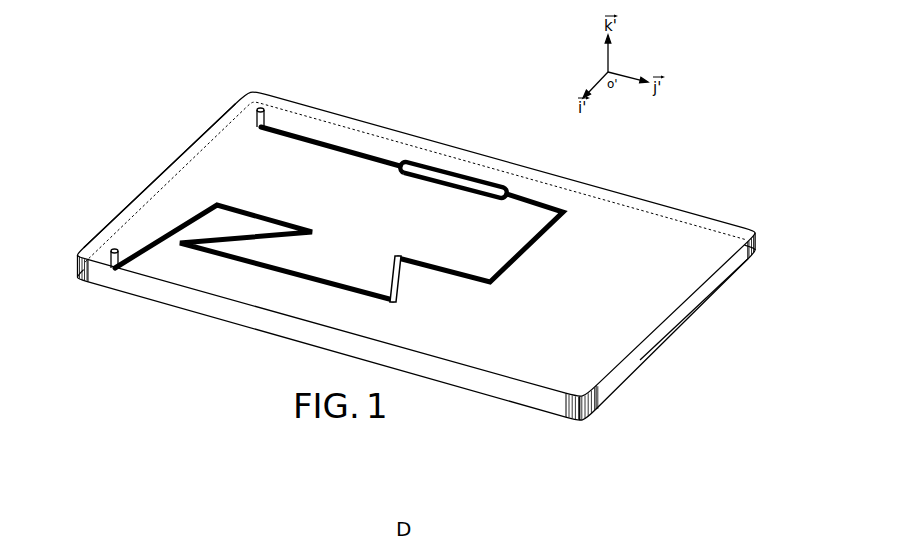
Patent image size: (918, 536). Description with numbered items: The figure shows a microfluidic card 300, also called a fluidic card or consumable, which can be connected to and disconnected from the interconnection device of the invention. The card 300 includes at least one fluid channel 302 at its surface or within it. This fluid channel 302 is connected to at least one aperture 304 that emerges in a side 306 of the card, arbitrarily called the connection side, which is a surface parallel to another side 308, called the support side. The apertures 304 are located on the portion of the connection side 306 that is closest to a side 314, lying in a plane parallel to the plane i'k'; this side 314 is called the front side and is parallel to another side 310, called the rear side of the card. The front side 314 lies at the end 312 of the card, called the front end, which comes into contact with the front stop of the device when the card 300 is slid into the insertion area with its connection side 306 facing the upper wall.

The card 300 is at (445, 128).
The fluid channel 302 is at (310, 140).
The aperture 304 is at (257, 109).
The connection side 306 is at (663, 233).
The support side 308 is at (685, 337).
The rear side 310 is at (723, 278).
The front end 312 is at (143, 290).
The front side 314 is at (96, 228).